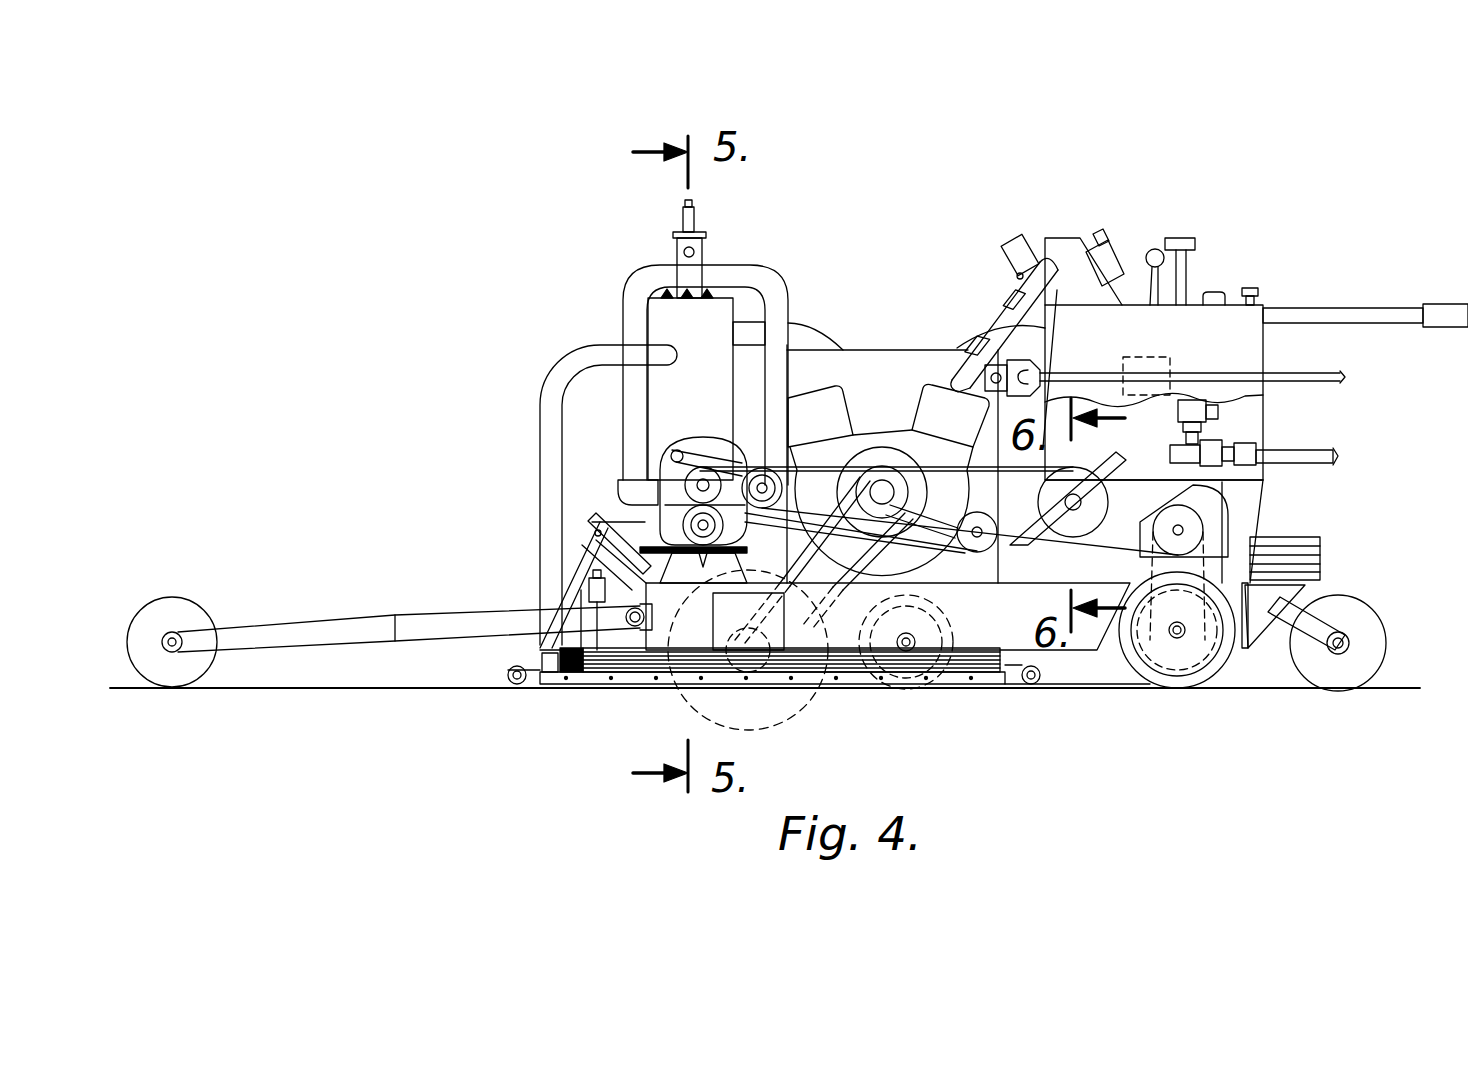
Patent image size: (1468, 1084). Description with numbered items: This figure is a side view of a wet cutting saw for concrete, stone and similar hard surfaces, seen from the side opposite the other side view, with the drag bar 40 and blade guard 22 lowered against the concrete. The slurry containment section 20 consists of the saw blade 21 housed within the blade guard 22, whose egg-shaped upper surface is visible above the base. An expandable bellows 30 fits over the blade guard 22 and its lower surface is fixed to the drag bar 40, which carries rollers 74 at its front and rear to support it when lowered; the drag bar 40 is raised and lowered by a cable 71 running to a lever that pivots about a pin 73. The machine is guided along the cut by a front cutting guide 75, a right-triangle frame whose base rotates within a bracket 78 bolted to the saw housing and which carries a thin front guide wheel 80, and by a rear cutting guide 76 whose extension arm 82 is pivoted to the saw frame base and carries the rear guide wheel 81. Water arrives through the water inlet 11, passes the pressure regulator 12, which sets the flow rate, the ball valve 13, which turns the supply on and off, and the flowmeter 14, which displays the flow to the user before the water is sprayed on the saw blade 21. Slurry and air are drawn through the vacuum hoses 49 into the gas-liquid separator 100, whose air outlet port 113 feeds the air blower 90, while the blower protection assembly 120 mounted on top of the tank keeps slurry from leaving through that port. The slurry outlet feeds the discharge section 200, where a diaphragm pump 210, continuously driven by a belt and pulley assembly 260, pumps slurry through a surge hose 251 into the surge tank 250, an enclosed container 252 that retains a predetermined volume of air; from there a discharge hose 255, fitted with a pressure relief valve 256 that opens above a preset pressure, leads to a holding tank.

The water inlet 11 is at (1303, 373).
The pressure regulator 12 is at (1005, 375).
The ball valve 13 is at (1020, 243).
The flowmeter 14 is at (992, 298).
The slurry containment section 20 is at (630, 695).
The saw blade 21 is at (795, 707).
The blade guard 22 is at (622, 530).
The expandable bellows 30 is at (578, 682).
The drag bar 40 is at (553, 683).
The vacuum hoses 49 is at (540, 378).
The cable 71 is at (572, 574).
The pin 73 is at (580, 530).
The rollers 74 is at (507, 668).
The front cutting guide 75 is at (345, 598).
The rear cutting guide 76 is at (1388, 592).
The bracket 78 is at (644, 608).
The front guide wheel 80 is at (178, 600).
The rear guide wheel 81 is at (1376, 652).
The extension arm 82 is at (1276, 642).
The air blower 90 is at (722, 437).
The gas-liquid separator 100 is at (752, 300).
The air outlet port 113 is at (685, 278).
The blower protection assembly 120 is at (730, 240).
The discharge section 200 is at (1050, 598).
The diaphragm pump 210 is at (1165, 556).
The surge tank 250 is at (1240, 483).
The surge hose 251 is at (1137, 475).
The enclosed container 252 is at (1150, 357).
The discharge hose 255 is at (1312, 452).
The pressure relief valve 256 is at (1230, 412).
The belt and pulley assembly 260 is at (1005, 570).